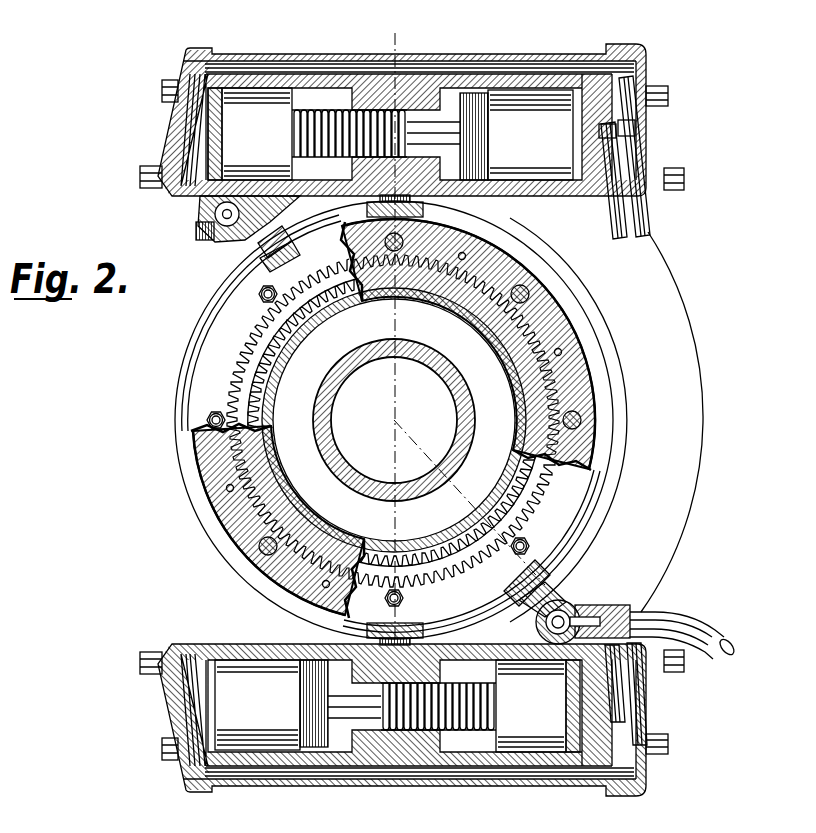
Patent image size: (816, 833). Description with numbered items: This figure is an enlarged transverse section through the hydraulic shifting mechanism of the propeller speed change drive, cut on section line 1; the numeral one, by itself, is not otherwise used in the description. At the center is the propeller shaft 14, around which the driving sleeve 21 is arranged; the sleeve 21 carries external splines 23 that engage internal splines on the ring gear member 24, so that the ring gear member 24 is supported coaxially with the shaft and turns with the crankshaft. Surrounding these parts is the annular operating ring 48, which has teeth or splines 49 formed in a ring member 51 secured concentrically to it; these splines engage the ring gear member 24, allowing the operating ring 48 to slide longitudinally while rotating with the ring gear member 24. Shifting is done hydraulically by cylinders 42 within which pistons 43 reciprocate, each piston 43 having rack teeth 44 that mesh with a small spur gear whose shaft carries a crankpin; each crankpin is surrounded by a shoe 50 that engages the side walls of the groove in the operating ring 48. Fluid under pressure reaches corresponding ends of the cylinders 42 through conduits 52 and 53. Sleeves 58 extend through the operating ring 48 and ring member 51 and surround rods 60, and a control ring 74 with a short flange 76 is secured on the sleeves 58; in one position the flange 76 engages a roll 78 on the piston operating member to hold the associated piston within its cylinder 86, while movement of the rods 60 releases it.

The section line 1- 1 is at (586, 650).
The propeller shaft 14 is at (343, 467).
The sleeve 21 is at (265, 388).
The external splines 23 is at (342, 298).
The ring gear member 24 is at (250, 390).
The cylinder 42 is at (238, 647).
The piston 43 is at (517, 717).
The rack teeth 44 is at (463, 717).
The operating ring 48 is at (560, 310).
The teeth or splines 49 is at (265, 316).
The shoe 50 is at (420, 192).
The ring member 51 is at (573, 373).
The conduit 52 is at (420, 772).
The conduit 53 is at (620, 687).
The sleeve 58 is at (600, 447).
The rod 60 is at (577, 418).
The control ring 74 is at (203, 347).
The flange 76 is at (582, 520).
The roll 78 is at (570, 573).
The cylinder 86 is at (643, 607).